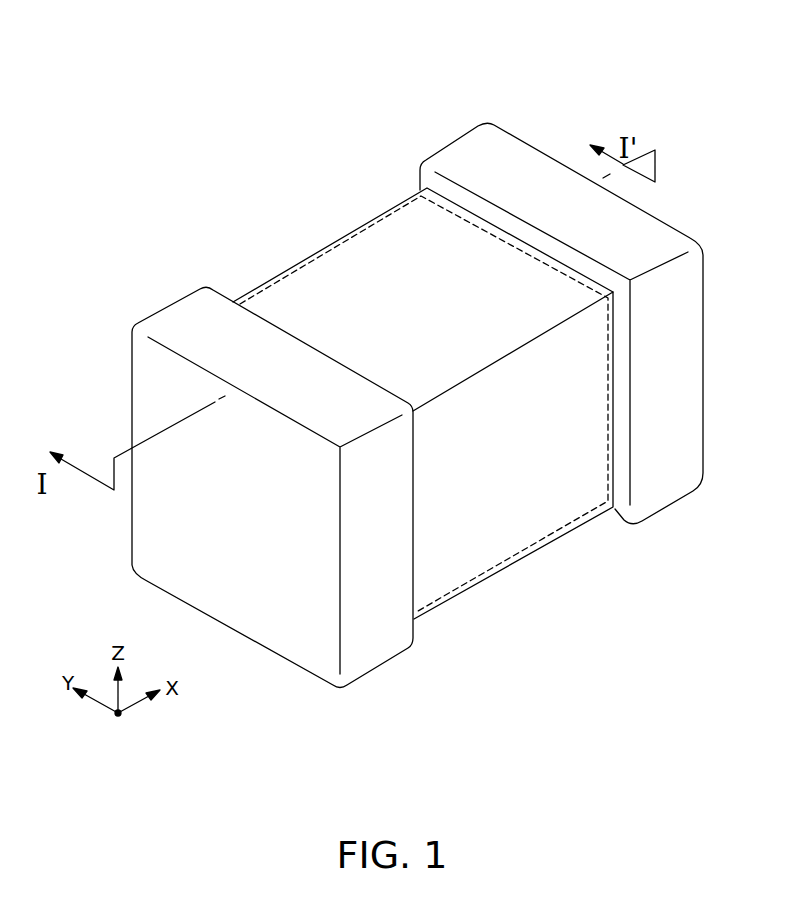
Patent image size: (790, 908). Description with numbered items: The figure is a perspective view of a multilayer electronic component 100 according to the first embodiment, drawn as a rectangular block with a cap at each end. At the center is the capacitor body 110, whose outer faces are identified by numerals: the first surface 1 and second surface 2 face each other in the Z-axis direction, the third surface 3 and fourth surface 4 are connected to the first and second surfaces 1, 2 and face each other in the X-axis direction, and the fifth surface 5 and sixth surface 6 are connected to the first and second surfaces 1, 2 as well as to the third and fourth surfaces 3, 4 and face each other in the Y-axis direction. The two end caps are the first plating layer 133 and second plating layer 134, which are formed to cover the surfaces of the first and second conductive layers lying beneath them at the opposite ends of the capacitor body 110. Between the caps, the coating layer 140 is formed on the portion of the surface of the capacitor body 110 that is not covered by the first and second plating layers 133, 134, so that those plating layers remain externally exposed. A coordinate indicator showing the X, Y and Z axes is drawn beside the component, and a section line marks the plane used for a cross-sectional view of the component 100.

The multilayer electronic component 100 is at (76, 61).
The capacitor body 110 is at (328, 247).
The first plating layer 133 is at (170, 322).
The second plating layer 134 is at (477, 147).
The coating layer 140 is at (359, 263).
The first surface 1 is at (463, 566).
The second surface 2 is at (414, 235).
The third surface 3 is at (166, 518).
The fourth surface 4 is at (525, 157).
The fifth surface 5 is at (267, 301).
The sixth surface 6 is at (542, 512).